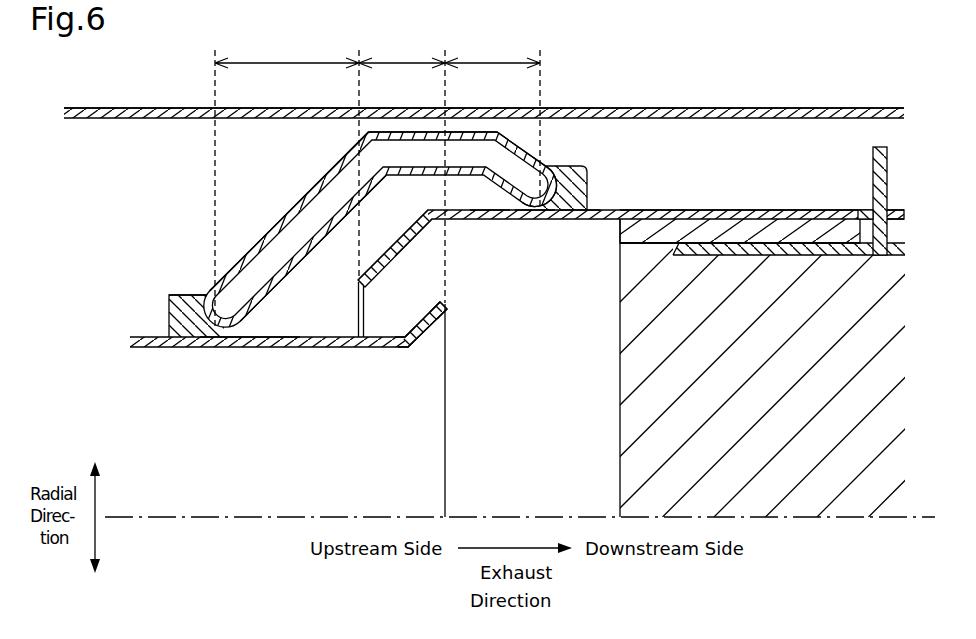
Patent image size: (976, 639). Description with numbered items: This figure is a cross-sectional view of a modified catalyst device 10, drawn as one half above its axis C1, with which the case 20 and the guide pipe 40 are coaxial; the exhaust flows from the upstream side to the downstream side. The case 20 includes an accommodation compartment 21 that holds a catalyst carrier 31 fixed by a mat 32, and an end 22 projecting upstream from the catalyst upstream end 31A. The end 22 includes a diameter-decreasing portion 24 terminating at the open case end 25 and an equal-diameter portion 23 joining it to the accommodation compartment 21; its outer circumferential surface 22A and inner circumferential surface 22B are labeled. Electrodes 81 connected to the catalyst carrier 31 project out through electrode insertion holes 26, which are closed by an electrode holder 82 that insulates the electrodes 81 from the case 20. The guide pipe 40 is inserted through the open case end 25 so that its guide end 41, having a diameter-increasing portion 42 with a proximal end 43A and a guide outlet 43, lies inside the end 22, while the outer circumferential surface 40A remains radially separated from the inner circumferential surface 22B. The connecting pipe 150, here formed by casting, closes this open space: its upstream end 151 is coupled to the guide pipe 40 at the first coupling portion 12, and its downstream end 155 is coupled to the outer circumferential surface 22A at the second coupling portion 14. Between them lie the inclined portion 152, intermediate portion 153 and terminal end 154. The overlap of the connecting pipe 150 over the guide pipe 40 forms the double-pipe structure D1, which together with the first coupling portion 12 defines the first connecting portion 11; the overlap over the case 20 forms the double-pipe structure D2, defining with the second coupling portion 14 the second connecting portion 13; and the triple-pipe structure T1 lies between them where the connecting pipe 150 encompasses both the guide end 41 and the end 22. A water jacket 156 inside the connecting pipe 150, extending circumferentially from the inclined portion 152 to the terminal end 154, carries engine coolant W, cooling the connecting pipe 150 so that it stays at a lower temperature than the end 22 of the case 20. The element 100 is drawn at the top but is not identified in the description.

The catalyst device 10 is at (716, 50).
The outer wall plate 100 is at (785, 108).
The first connecting portion 11 is at (206, 232).
The first coupling portion 12 is at (152, 316).
The second connecting portion 13 is at (565, 153).
The second coupling portion 14 is at (614, 205).
The connecting pipe 150 is at (293, 208).
The upstream end 151 is at (187, 295).
The inclined portion 152 is at (262, 240).
The intermediate portion 153 is at (396, 132).
The terminal end 154 is at (522, 150).
The downstream end 155 is at (580, 165).
The water jacket 156 is at (288, 258).
The case 20 is at (708, 210).
The accommodation compartment 21 is at (756, 219).
The end 22 is at (383, 266).
The outer circumferential surface 22A is at (490, 212).
The inner circumferential surface 22B is at (528, 220).
The equal-diameter portion 23 is at (577, 220).
The diameter-decreasing portion 24 is at (408, 245).
The open case end 25 is at (357, 288).
The electrode insertion hole 26 is at (866, 211).
The catalyst carrier 31 is at (633, 423).
The catalyst upstream end 31A is at (620, 376).
The mat 32 is at (811, 232).
The guide pipe 40 is at (318, 348).
The outer circumferential surface 40A is at (249, 337).
The guide end 41 is at (393, 349).
The diameter-increasing portion 42 is at (428, 336).
The guide outlet 43 is at (447, 452).
The proximal end 43A is at (428, 348).
The electrode 81 is at (872, 155).
The electrode holder 82 is at (896, 210).
The coolant W is at (331, 170).
The double-pipe structure D1 is at (288, 63).
The triple-pipe structure T1 is at (403, 63).
The double-pipe structure D2 is at (490, 63).
The axis C1 is at (210, 527).